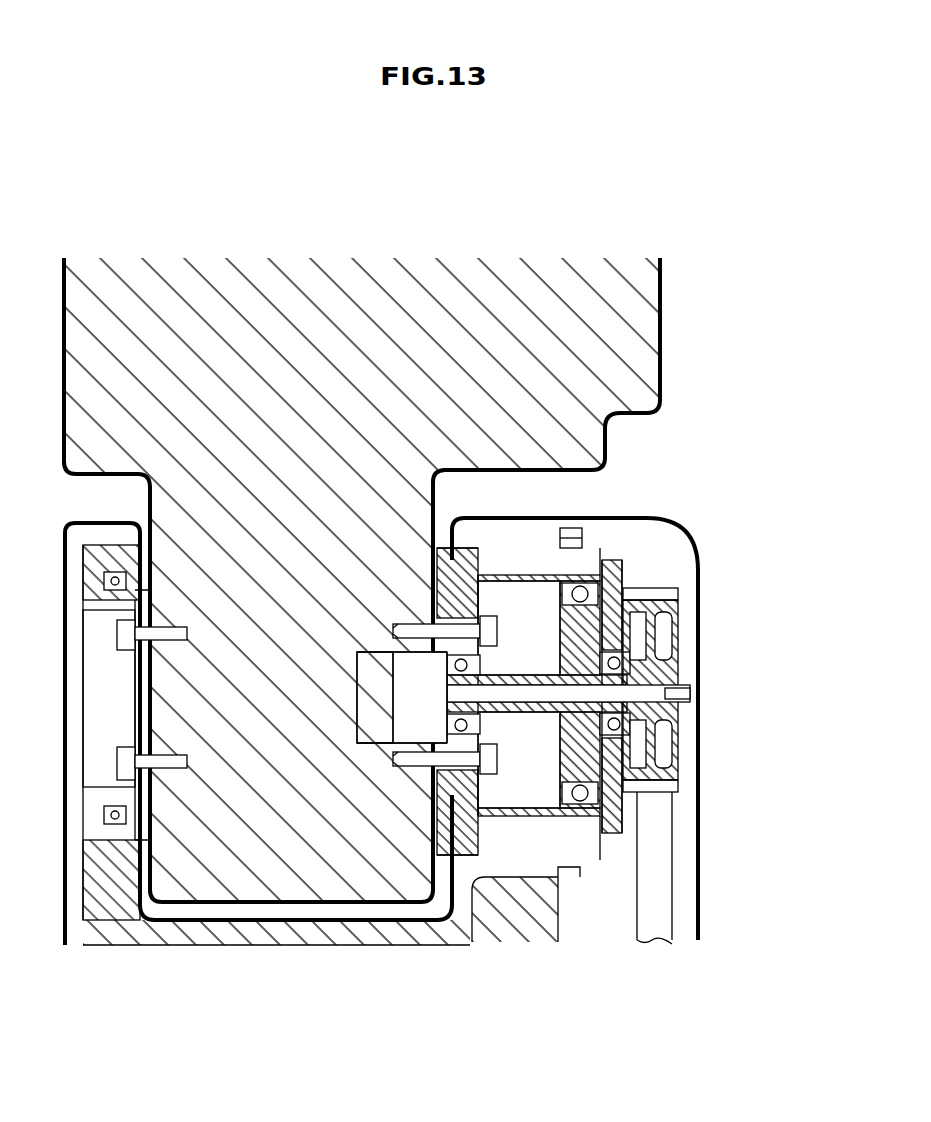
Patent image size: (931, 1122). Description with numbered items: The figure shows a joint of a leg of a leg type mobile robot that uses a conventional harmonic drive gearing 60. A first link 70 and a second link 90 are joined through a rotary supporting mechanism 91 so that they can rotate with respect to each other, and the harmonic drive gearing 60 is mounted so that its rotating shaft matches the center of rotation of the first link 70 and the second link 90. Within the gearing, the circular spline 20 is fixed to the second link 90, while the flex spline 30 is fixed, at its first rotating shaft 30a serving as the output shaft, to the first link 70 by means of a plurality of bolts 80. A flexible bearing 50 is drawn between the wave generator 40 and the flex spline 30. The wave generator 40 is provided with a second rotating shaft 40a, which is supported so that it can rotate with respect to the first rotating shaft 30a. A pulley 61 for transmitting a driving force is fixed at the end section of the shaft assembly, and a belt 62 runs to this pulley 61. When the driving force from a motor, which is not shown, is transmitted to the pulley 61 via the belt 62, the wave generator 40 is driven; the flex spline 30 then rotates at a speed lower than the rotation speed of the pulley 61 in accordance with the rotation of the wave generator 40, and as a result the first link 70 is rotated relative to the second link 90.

The first link 70 is at (145, 256).
The second link 90 is at (294, 952).
The rotary supporting mechanism 91 is at (108, 722).
The harmonic drive gearing 60 is at (612, 535).
The circular spline 20 is at (572, 525).
The flex spline 30 is at (503, 556).
The flexible bearing 50 is at (585, 585).
The wave generator 40 is at (592, 592).
The pulley 61 is at (680, 597).
The second rotating shaft 40a is at (663, 700).
The belt 62 is at (652, 878).
The first rotating shaft 30a is at (377, 735).
The bolt 80 is at (493, 762).